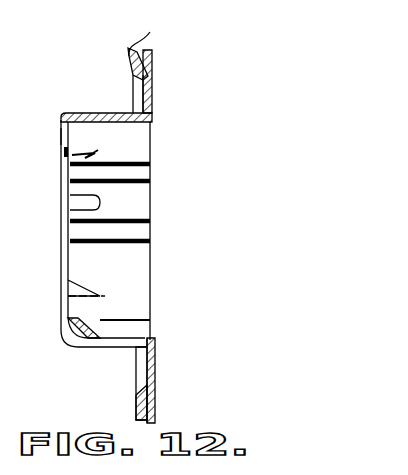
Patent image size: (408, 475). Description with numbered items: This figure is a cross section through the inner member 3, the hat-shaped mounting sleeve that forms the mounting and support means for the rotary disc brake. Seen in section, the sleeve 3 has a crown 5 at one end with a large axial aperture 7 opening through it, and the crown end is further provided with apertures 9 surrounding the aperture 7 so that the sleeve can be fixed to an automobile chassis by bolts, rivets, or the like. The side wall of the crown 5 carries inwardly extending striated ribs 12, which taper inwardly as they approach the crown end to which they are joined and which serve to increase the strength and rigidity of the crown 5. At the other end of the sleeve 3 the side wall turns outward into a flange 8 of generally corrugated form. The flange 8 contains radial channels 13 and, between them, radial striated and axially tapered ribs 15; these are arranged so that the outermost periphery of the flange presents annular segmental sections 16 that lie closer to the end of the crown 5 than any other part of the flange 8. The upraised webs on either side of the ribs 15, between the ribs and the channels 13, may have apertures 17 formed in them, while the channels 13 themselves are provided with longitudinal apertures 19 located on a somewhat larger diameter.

The inner member 3 is at (62, 273).
The crown 5 is at (70, 113).
The axial aperture 7 is at (64, 152).
The flange 8 is at (143, 35).
The apertures 9 is at (61, 136).
The striated ribs 12 is at (100, 156).
The radial channels 13 is at (155, 400).
The radial striated ribs 15 is at (150, 86).
The annular segmental sections 16 is at (130, 52).
The apertures 17 is at (133, 100).
The longitudinal apertures 19 is at (155, 375).